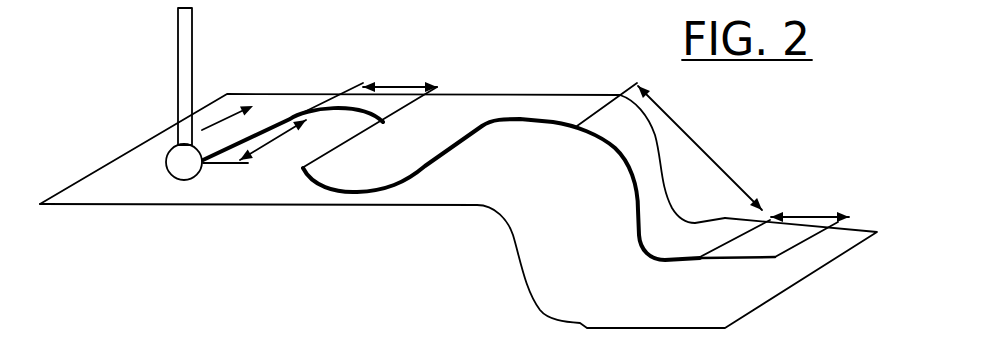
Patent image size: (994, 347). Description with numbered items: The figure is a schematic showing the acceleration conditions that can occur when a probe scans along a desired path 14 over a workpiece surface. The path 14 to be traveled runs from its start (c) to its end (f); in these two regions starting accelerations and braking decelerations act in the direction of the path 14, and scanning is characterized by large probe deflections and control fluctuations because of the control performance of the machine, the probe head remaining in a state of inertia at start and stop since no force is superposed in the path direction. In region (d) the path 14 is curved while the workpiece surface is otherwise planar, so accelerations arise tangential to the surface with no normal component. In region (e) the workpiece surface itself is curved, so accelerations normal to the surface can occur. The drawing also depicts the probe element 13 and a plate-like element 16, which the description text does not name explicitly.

The probe stylus with probe ball 13 is at (178, 68).
The path 14 is at (380, 193).
The flat reference plate 16 is at (120, 188).
The start of the path c is at (263, 145).
The region of tangential acceleration d is at (380, 87).
The region of normal acceleration e is at (692, 137).
The end of the path f is at (832, 213).